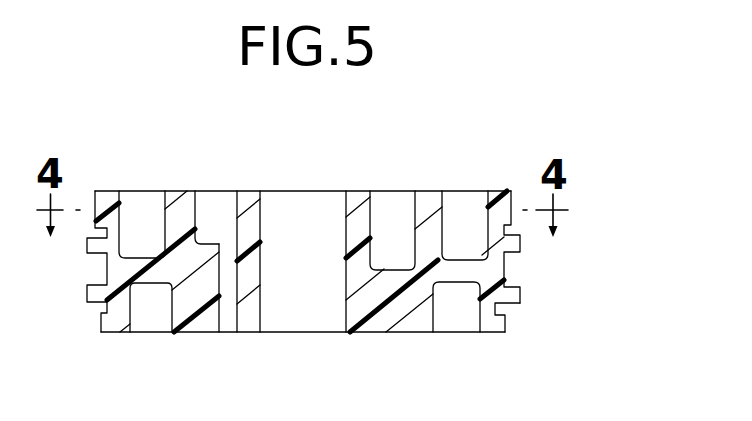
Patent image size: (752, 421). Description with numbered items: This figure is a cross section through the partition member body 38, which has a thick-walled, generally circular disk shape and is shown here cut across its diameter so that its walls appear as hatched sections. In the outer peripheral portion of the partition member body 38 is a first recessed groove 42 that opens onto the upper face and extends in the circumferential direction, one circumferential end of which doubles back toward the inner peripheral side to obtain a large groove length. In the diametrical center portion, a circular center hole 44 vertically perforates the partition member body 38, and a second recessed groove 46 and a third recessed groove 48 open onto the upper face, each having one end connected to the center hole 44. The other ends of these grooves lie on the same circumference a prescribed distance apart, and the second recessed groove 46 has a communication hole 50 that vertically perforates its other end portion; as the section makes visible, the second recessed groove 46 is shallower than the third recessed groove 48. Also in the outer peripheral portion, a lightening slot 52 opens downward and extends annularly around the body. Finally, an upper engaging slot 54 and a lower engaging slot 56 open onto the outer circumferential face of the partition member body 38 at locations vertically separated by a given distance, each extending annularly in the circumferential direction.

The partition member body 38 is at (484, 158).
The first recessed groove 42 is at (141, 258).
The center hole 44 is at (326, 314).
The second recessed groove 46 is at (191, 210).
The third recessed groove 48 is at (400, 207).
The communication hole 50 is at (221, 313).
The lightening slot 52 is at (463, 318).
The upper engaging slot 54 is at (505, 237).
The lower engaging slot 56 is at (495, 308).